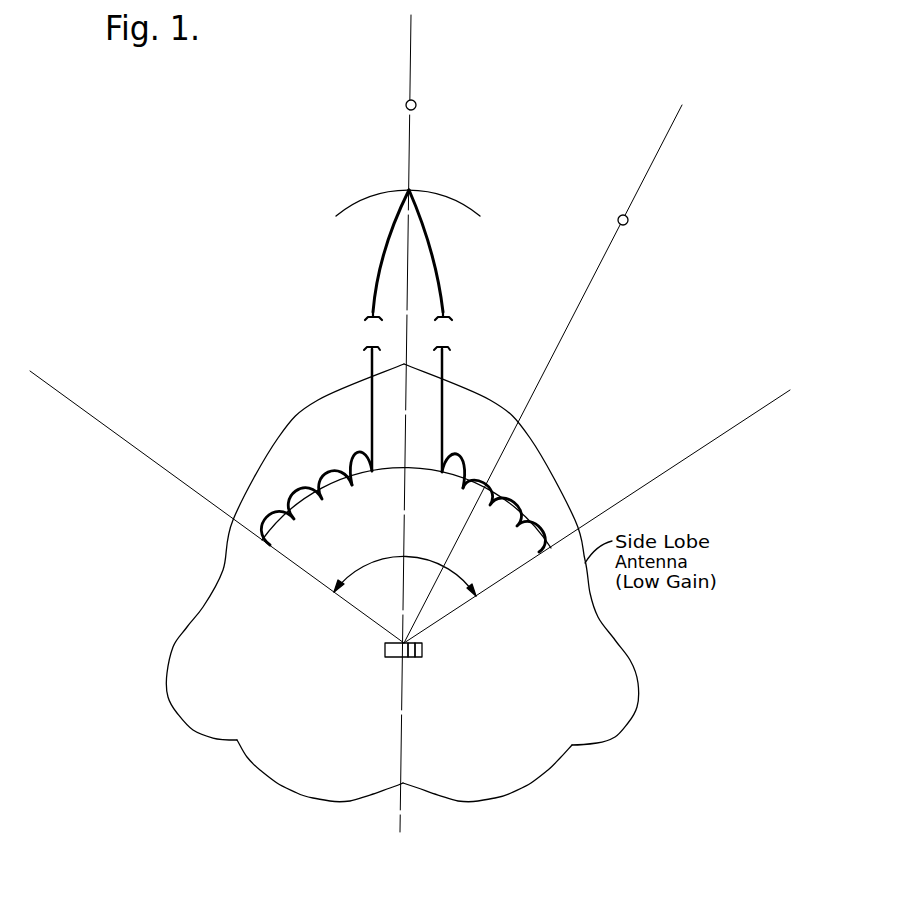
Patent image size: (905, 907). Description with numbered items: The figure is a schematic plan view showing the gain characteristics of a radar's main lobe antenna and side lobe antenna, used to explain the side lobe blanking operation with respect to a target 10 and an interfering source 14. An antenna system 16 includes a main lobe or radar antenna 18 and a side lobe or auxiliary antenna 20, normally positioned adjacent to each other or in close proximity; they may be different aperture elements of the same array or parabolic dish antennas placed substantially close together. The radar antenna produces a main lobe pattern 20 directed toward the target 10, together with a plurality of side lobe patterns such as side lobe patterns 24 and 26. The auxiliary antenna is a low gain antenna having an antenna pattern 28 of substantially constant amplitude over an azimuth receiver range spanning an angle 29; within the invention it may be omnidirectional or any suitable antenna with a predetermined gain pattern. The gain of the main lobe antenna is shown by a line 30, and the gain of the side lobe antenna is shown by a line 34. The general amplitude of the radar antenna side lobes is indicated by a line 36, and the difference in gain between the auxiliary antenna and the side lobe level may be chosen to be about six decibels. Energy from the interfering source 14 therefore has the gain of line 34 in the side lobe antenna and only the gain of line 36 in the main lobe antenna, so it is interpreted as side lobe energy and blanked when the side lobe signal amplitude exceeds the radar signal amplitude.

The target 10 is at (416, 103).
The interfering source 14 is at (629, 218).
The antenna system 16 is at (410, 658).
The main lobe or radar antenna 18 is at (385, 649).
The side lobe or auxiliary antenna 20 is at (443, 273).
The side lobe pattern 24 is at (452, 462).
The side lobe pattern 26 is at (364, 452).
The antenna pattern of the side lobe antenna 28 is at (278, 437).
The angle 29 is at (380, 556).
The gain line of the main lobe antenna 30 is at (358, 200).
The gain line of the side lobe antenna 34 is at (470, 385).
The side lobe amplitude line 36 is at (490, 500).